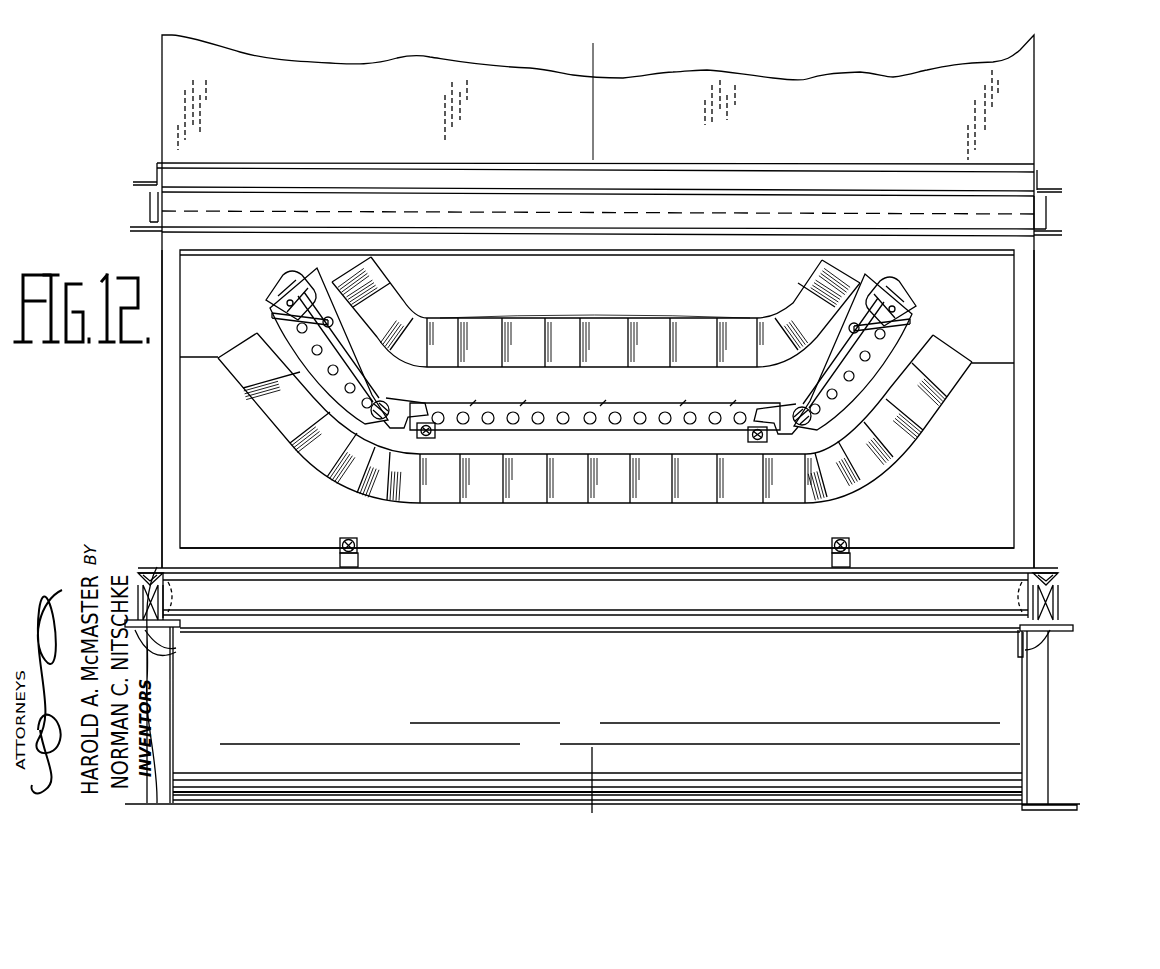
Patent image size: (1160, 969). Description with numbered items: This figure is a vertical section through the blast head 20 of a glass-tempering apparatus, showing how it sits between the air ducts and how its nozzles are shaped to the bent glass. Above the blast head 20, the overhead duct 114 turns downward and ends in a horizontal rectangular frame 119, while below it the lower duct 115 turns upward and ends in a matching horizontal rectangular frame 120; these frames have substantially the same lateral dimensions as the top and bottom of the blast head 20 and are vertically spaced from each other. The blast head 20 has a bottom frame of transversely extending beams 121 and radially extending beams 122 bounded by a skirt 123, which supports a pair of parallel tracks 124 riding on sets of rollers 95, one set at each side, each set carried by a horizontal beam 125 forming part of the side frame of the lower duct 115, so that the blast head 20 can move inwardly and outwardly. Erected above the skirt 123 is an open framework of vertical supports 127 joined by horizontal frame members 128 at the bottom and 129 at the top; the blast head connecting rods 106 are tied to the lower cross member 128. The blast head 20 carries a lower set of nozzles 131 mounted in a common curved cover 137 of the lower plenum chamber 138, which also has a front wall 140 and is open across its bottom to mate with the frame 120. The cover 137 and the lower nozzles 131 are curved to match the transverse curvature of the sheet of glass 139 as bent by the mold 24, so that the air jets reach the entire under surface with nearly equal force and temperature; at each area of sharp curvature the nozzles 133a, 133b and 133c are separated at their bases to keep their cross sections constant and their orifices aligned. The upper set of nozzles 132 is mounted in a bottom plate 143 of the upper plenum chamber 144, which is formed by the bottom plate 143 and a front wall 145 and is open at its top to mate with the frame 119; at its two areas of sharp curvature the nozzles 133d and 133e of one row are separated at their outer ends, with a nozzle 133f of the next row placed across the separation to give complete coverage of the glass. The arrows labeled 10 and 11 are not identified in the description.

The direction of conveyance arrow 10 is at (560, 60).
The return direction arrow 11 is at (544, 803).
The blast head 20 is at (1040, 379).
The glass mold 24 is at (272, 321).
The rollers 95 is at (178, 648).
The blast head connecting rod 106 is at (358, 543).
The overhead duct 114 is at (1025, 120).
The lower duct 115 is at (1024, 717).
The horizontal rectangular frame 119 is at (1049, 212).
The horizontal rectangular frame 120 is at (1062, 632).
The transversely extending beams 121 is at (1025, 651).
The radially extending beams 122 is at (177, 592).
The skirt 123 is at (150, 570).
The tracks 124 is at (140, 590).
The horizontal beam 125 is at (176, 672).
The vertical supports 127 is at (160, 416).
The horizontal frame members 128 is at (738, 548).
The horizontal frame members 129 is at (258, 251).
The lower set of nozzles 131 is at (631, 452).
The upper set of nozzles 132 is at (673, 366).
The nozzle 133a is at (337, 423).
The nozzle 133b is at (840, 442).
The nozzle 133c is at (415, 455).
The nozzle 133d is at (735, 378).
The nozzle 133e is at (591, 350).
The nozzle 133f is at (405, 356).
The curved cover 137 is at (592, 497).
The lower plenum chamber 138 is at (993, 363).
The bent sheet of glass 139 is at (508, 400).
The front wall 140 is at (262, 491).
The bottom plate 143 is at (690, 328).
The upper plenum chamber 144 is at (828, 268).
The front wall 145 is at (721, 293).